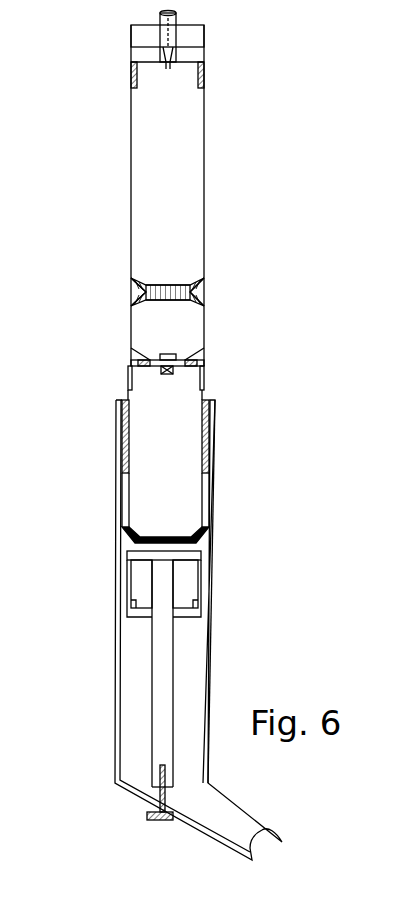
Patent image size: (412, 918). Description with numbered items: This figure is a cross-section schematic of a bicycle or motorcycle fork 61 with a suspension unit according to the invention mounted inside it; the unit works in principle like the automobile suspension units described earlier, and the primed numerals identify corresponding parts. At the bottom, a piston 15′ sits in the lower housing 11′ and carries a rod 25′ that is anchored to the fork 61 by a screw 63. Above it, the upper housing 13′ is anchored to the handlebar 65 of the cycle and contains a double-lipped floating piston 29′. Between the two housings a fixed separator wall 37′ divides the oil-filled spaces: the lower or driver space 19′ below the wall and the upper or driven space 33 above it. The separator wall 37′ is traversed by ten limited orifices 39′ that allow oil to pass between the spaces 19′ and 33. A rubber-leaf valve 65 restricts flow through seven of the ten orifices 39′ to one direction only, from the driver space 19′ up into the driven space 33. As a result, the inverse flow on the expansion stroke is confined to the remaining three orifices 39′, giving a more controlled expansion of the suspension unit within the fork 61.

The handlebar / rubber-leaf valve 65 is at (198, 37).
The upper housing 13′ is at (198, 135).
The upper or driven space 33 is at (140, 195).
The double-lipped floating piston 29′ is at (190, 292).
The fixed separator wall 37′ is at (198, 350).
The limited orifices 39′ is at (200, 374).
The lower or driver space 19′ is at (140, 490).
The piston 15′ is at (196, 552).
The lower housing 11′ is at (201, 588).
The rod 25′ is at (165, 645).
The bicycle or motorcycle fork 61 is at (115, 714).
The screw 63 is at (146, 818).